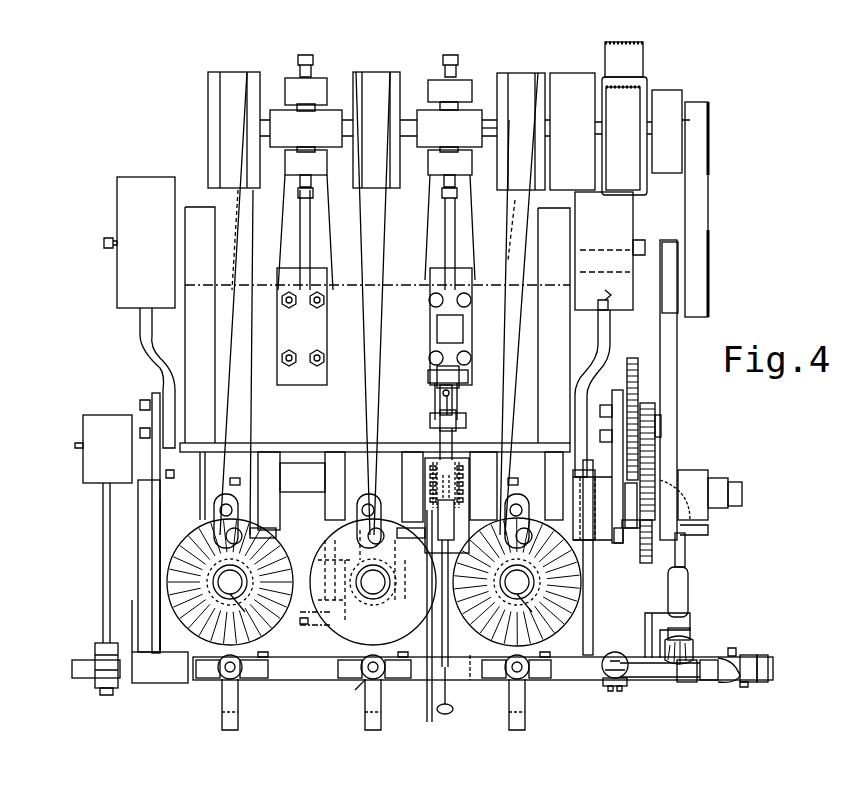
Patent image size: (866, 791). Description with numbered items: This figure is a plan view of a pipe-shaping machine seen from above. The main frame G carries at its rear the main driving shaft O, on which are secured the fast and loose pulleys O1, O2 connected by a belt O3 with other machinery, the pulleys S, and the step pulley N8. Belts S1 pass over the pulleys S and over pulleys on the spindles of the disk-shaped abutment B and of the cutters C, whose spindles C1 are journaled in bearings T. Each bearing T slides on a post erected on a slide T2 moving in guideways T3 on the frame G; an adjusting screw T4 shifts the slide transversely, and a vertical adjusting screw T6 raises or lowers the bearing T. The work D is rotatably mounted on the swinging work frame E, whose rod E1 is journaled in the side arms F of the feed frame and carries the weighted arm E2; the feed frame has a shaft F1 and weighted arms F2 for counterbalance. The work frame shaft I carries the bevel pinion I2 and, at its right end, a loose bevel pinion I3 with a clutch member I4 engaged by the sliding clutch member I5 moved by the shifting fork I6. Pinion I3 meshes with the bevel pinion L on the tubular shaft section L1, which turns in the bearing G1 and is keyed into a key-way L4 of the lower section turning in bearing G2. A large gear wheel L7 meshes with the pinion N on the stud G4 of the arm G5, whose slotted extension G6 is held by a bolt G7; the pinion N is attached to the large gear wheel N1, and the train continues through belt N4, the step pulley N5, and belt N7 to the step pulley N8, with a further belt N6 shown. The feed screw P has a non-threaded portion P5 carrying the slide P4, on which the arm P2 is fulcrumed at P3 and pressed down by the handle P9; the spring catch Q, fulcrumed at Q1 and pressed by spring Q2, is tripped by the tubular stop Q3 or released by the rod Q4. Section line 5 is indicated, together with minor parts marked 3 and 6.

The pulleys S is at (213, 75).
The belts S1 is at (226, 246).
The main driving shaft O is at (490, 122).
The fast pulley O1 is at (640, 84).
The loose pulley O2 is at (575, 80).
The belt O3 is at (627, 52).
The pinion N is at (645, 403).
The large gear wheel N1 is at (631, 356).
The belt N4 is at (668, 396).
The step pulley N5 is at (628, 292).
The belt N6 is at (710, 283).
The belt N7 is at (700, 205).
The step pulley N8 is at (710, 122).
The main frame G is at (375, 329).
The bearing G1 is at (656, 618).
The bearing G2 is at (720, 482).
The stud G4 is at (661, 423).
The arm G5 is at (615, 452).
The slotted extension G6 is at (619, 546).
The bolt G7 is at (630, 530).
The bevel pinion L is at (690, 650).
The tubular shaft section L1 is at (688, 604).
The key-way L4 is at (684, 550).
The large gear wheel L7 is at (646, 563).
The work frame shaft I is at (291, 672).
The bevel pinion I2 is at (617, 660).
The bevel pinion I3 is at (689, 684).
The clutch member I4 is at (720, 684).
The clutch member I5 is at (757, 657).
The shifting fork I6 is at (650, 680).
The side arms F is at (150, 520).
The shaft F1 is at (135, 493).
The weighted arms F2 is at (146, 340).
The work frame E is at (238, 724).
The rod E1 is at (122, 682).
The weighted arm E2 is at (103, 570).
The work D is at (222, 680).
The cutters C is at (185, 577).
The spindles C1 is at (375, 604).
The disk-shaped abutment B is at (373, 582).
The bearing T is at (231, 489).
The slide T2 is at (256, 452).
The guideways T3 is at (333, 455).
The adjusting screw T4 is at (313, 622).
The vertical adjusting screw T6 is at (367, 503).
The feed screw P is at (436, 462).
The arm P2 is at (458, 398).
The fulcrum P3 is at (437, 377).
The slide P4 is at (440, 396).
The non-threaded portion P5 is at (445, 346).
The handle P9 is at (429, 724).
The spring catch Q is at (452, 430).
The fulcrum Q1 is at (440, 421).
The spring Q2 is at (452, 406).
The tubular stop Q3 is at (448, 654).
The rod Q4 is at (449, 712).
The lever 3 is at (360, 685).
The section line 5 is at (471, 680).
The roller 6 is at (250, 528).